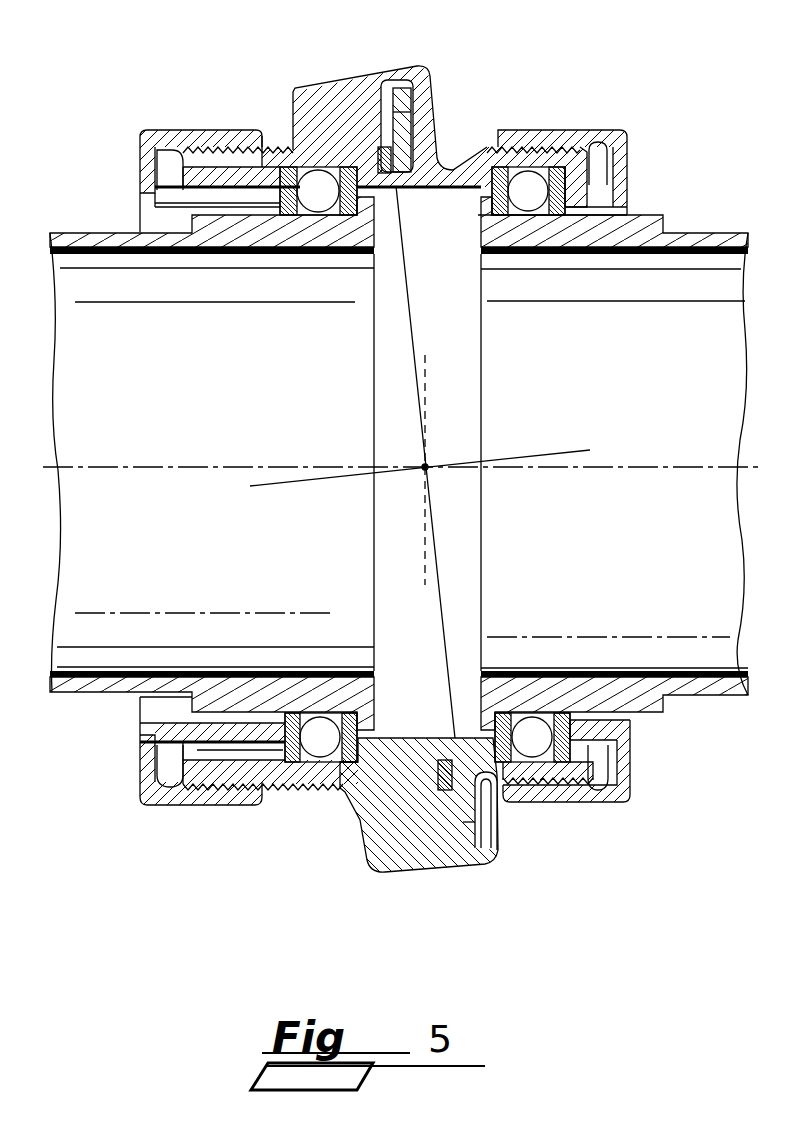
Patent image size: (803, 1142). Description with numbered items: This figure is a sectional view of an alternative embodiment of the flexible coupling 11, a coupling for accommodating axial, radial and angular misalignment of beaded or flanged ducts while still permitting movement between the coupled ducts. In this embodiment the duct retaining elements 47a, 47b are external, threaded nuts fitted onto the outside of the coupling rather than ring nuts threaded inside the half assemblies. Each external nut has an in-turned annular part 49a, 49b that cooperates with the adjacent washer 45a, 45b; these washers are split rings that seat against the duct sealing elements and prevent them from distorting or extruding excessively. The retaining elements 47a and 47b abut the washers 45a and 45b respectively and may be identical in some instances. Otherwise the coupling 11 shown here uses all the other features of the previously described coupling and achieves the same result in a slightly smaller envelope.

The flexible coupling 11 is at (455, 84).
The second washer 45a is at (563, 712).
The second washer 45b is at (288, 712).
The retaining element 47a is at (588, 130).
The retaining element 47b is at (215, 132).
The in-turned annular part 49a is at (627, 203).
The in-turned annular part 49b is at (163, 220).